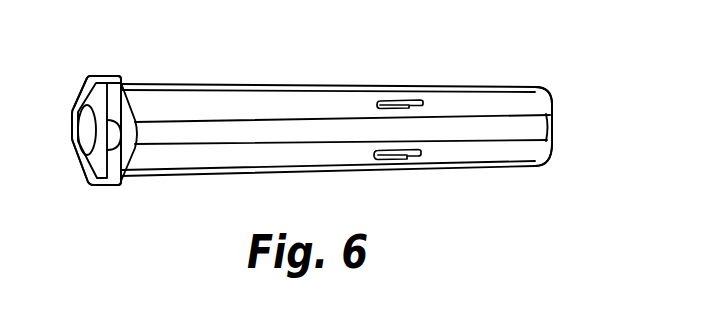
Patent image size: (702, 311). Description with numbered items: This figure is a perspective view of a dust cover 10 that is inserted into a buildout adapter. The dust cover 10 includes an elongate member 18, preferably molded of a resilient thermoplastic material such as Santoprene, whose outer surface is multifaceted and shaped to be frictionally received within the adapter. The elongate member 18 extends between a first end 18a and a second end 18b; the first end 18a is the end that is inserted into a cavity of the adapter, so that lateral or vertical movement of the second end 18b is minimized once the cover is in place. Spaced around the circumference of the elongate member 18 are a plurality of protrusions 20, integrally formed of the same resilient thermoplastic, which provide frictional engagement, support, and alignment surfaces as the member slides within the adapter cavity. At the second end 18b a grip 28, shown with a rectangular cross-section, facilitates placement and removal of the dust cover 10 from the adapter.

The dust cover 10 is at (284, 85).
The elongate member 18 is at (335, 85).
The first end 18a is at (543, 93).
The second end 18b is at (77, 107).
The protrusions 20 is at (407, 99).
The grip 28 is at (93, 185).